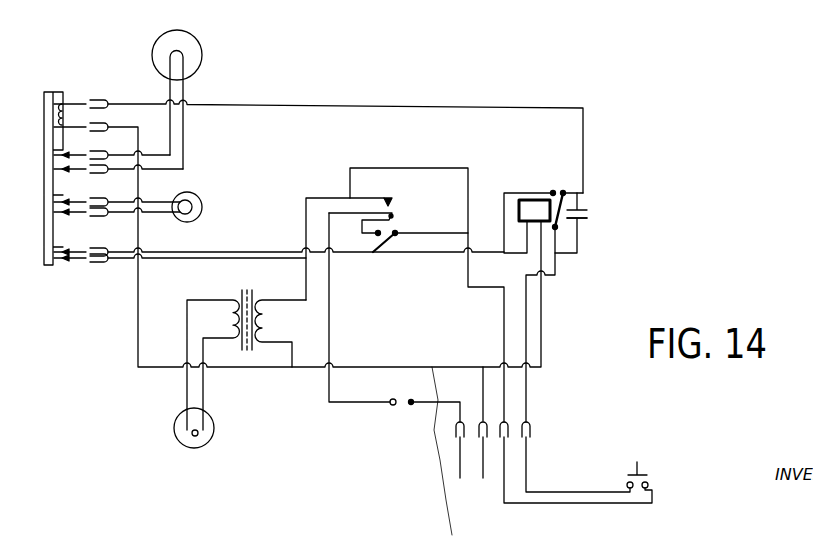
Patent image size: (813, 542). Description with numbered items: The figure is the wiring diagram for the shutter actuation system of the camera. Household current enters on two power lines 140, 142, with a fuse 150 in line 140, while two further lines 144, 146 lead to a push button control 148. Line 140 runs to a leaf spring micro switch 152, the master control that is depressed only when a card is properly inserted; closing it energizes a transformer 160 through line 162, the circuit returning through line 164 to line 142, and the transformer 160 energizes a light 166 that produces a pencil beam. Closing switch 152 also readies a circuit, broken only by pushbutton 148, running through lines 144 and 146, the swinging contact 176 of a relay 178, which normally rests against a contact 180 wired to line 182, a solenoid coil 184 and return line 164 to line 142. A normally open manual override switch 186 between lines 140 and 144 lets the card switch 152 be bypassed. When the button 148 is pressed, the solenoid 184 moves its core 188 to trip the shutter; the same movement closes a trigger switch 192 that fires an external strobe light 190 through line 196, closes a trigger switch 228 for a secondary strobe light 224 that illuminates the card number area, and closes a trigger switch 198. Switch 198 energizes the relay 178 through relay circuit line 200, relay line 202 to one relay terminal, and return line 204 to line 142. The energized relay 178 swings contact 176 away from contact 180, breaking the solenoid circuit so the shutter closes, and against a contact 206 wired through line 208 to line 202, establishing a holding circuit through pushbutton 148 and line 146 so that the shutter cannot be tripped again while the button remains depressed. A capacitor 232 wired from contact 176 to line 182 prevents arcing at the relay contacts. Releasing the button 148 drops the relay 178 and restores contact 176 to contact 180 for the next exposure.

The line 140 is at (331, 322).
The line 142 is at (483, 478).
The line 144 is at (425, 168).
The line 146 is at (575, 492).
The push button control 148 is at (648, 474).
The fuse 150 is at (396, 400).
The leaf spring micro switch 152 is at (372, 195).
The transformer 160 is at (262, 299).
The line 162 is at (305, 217).
The line 164 is at (408, 367).
The light 166 is at (214, 430).
The swinging contact 176 is at (578, 206).
The relay 178 is at (528, 202).
The contact 180 is at (563, 193).
The line 182 is at (416, 105).
The solenoid coil 184 is at (62, 97).
The manual override switch 186 is at (374, 253).
The core 188 is at (43, 189).
The strobe light 190 is at (218, 43).
The trigger switch 192 is at (67, 155).
The line 196 is at (184, 150).
The trigger switch 198 is at (63, 252).
The relay circuit line 200 is at (197, 259).
The relay line 202 is at (264, 251).
The return line 204 is at (543, 313).
The contact 206 is at (553, 193).
The line 208 is at (503, 212).
The secondary strobe light 224 is at (220, 185).
The trigger switch 228 is at (63, 202).
The capacitor 232 is at (590, 225).